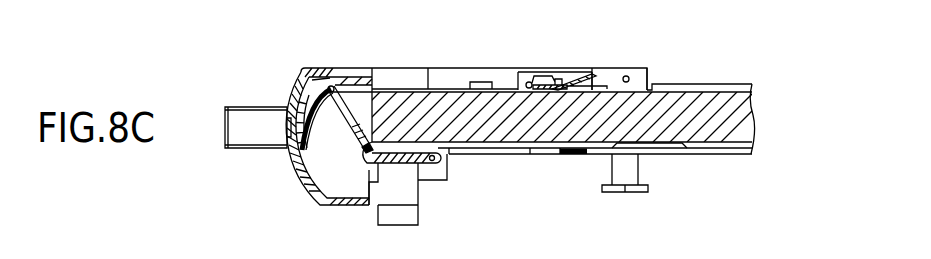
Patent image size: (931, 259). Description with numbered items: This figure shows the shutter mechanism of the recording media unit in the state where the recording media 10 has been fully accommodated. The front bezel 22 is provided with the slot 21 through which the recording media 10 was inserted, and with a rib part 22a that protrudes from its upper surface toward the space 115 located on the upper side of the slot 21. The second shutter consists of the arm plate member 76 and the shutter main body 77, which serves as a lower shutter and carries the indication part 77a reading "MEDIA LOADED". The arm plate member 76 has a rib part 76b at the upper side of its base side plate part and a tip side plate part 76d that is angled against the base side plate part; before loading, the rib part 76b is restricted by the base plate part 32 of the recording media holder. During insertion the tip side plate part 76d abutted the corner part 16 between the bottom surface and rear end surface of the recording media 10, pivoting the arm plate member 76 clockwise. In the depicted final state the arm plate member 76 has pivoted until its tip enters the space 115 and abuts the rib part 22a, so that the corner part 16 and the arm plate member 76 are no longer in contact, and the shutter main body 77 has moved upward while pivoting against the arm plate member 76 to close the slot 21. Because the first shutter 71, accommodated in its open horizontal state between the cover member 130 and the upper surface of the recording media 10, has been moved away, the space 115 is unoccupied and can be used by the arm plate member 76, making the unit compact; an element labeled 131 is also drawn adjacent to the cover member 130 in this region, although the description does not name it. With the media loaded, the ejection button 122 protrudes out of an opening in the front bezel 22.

The recording media 10 is at (450, 100).
The corner part 16 is at (358, 148).
The slot 21 is at (287, 132).
The front bezel 22 is at (293, 182).
The rib part 22a is at (320, 92).
The base plate part 32 is at (562, 158).
The first shutter 71 is at (577, 75).
The arm plate member 76 is at (391, 165).
The rib part 76b is at (420, 172).
The tip side plate part 76d is at (342, 143).
The shutter main body 77 is at (287, 100).
The indication part 77a is at (288, 96).
The space 115 is at (335, 85).
The ejection button 122 is at (235, 135).
The cover member 130 is at (552, 70).
The stop block 131 is at (617, 78).